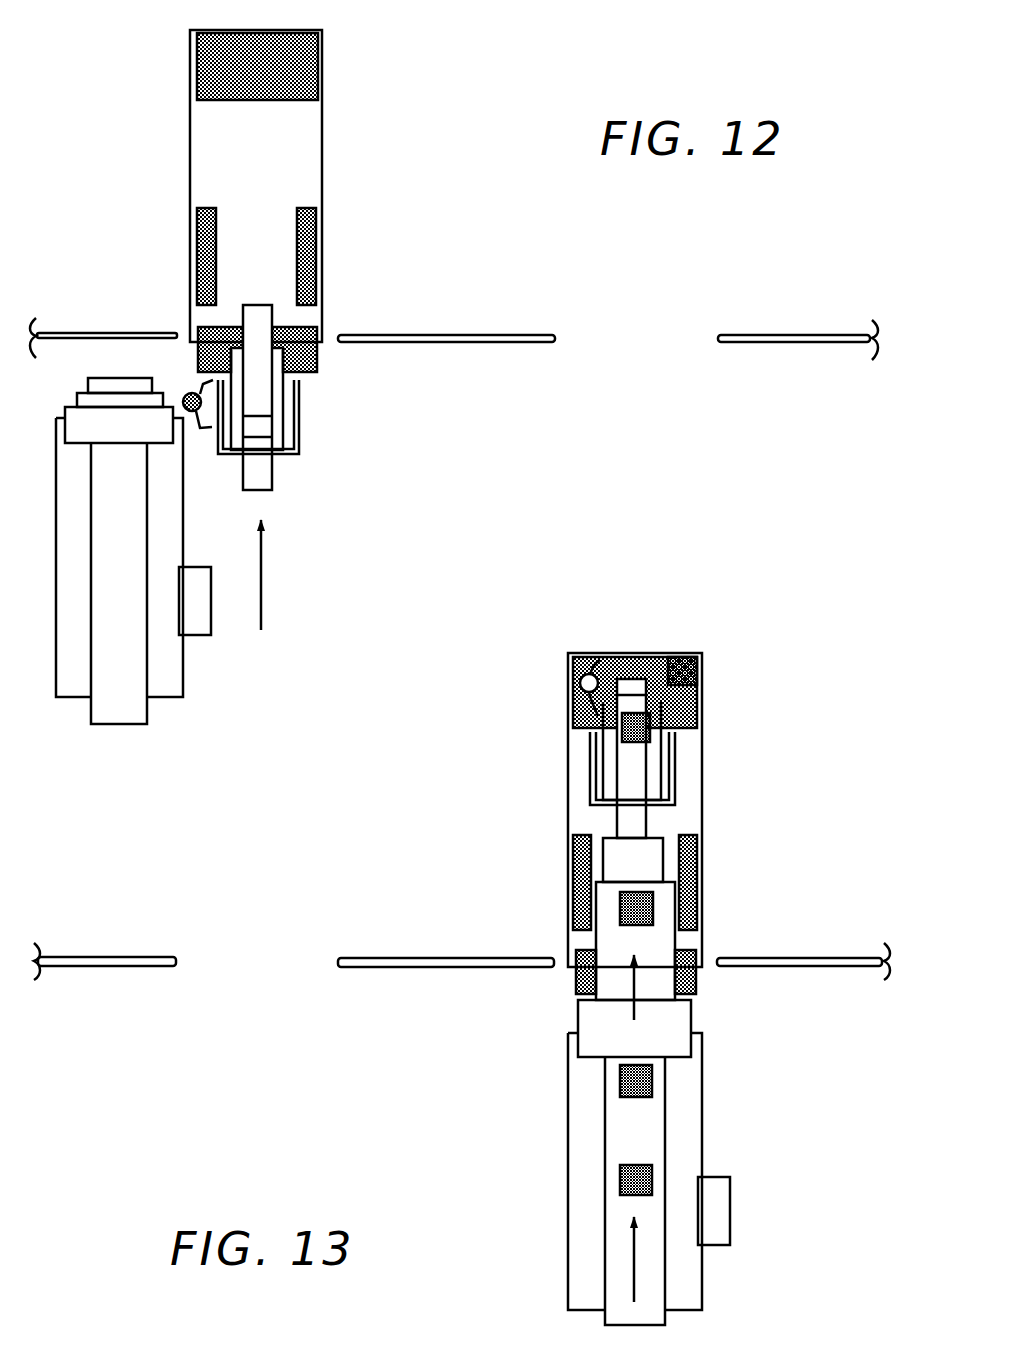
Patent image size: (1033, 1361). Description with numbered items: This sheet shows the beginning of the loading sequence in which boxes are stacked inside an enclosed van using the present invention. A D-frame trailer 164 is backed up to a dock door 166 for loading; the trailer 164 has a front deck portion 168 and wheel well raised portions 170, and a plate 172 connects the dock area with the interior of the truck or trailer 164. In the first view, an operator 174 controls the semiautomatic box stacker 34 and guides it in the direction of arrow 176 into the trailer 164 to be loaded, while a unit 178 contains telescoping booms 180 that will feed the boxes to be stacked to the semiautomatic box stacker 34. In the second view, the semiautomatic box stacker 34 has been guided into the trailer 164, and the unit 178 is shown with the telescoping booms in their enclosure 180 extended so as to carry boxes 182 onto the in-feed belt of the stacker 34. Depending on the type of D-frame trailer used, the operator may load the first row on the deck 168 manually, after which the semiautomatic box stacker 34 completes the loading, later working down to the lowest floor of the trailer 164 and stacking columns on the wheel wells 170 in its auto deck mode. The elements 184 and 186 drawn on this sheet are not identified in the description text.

In FIG. 12, the semiautomatic box stacker 34 is at (305, 437).
In FIG. 13, the semiautomatic box stacker 34 is at (590, 765).
In FIG. 12, the D-frame trailer 164 is at (325, 130).
In FIG. 13, the D-frame trailer 164 is at (705, 767).
In FIG. 12, the dock door 166 is at (590, 320).
In FIG. 13, the dock door 166 is at (556, 948).
In FIG. 12, the front deck portion 168 is at (308, 62).
In FIG. 13, the front deck portion 168 is at (692, 712).
In FIG. 12, the wheel well raised portions 170 is at (207, 240).
In FIG. 13, the wheel well raised portions 170 is at (582, 866).
In FIG. 12, the plate 172 is at (312, 352).
In FIG. 13, the plate 172 is at (690, 980).
In FIG. 12, the operator 174 is at (189, 394).
In FIG. 13, the operator 174 is at (580, 683).
In FIG. 12, the arrow 176 is at (262, 557).
In FIG. 12, the unit 178 is at (68, 703).
In FIG. 13, the unit 178 is at (707, 1133).
In FIG. 12, the telescoping booms 180 is at (85, 418).
In FIG. 13, the telescoping booms 180 is at (593, 1022).
In FIG. 13, the boxes 182 is at (620, 1182).
In FIG. 13, the direction arrow 184 is at (634, 1258).
In FIG. 13, the magnet elements 186 is at (682, 657).